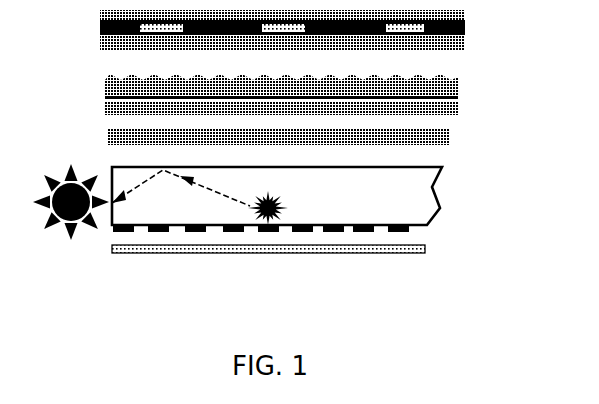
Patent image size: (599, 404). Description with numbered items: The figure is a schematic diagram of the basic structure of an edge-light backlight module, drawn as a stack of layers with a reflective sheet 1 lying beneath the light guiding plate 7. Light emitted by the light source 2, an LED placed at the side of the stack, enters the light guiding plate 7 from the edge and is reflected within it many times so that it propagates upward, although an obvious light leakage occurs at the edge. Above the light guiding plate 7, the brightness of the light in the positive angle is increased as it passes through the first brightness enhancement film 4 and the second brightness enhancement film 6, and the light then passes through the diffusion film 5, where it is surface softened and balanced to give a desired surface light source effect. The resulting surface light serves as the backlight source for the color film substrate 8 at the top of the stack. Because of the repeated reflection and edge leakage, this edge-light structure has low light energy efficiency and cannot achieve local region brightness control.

The reflector sheet 1 is at (425, 252).
The light source 2 is at (69, 172).
The first brightness enhancement film 4 is at (105, 115).
The diffusion film 5 is at (450, 143).
The second brightness enhancement film 6 is at (458, 92).
The light guiding plate 7 is at (420, 196).
The color film substrate 8 is at (100, 42).